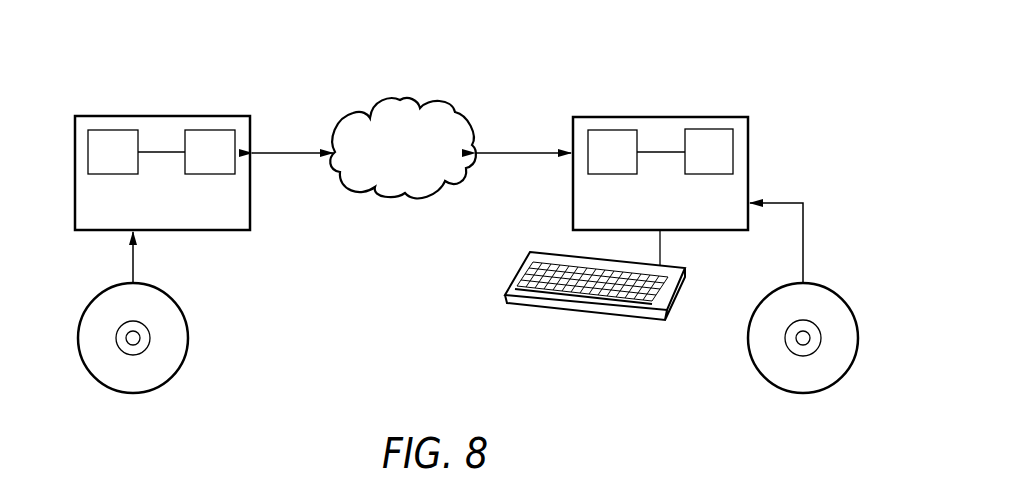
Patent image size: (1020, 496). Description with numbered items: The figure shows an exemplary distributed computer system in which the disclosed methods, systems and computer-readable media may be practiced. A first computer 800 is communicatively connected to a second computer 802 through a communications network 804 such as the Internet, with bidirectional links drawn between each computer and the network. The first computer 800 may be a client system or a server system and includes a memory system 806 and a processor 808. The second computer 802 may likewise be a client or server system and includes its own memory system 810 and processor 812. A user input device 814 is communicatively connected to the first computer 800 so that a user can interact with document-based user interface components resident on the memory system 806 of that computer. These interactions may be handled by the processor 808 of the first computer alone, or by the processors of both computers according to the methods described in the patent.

The computer system 800 is at (660, 117).
The remote computer 802 is at (163, 116).
The network 804 is at (402, 98).
The microprocessor 806 is at (610, 174).
The program memory 808 is at (708, 174).
The microprocessor 810 is at (113, 174).
The program memory 812 is at (207, 174).
The input/output device 814 is at (190, 338).